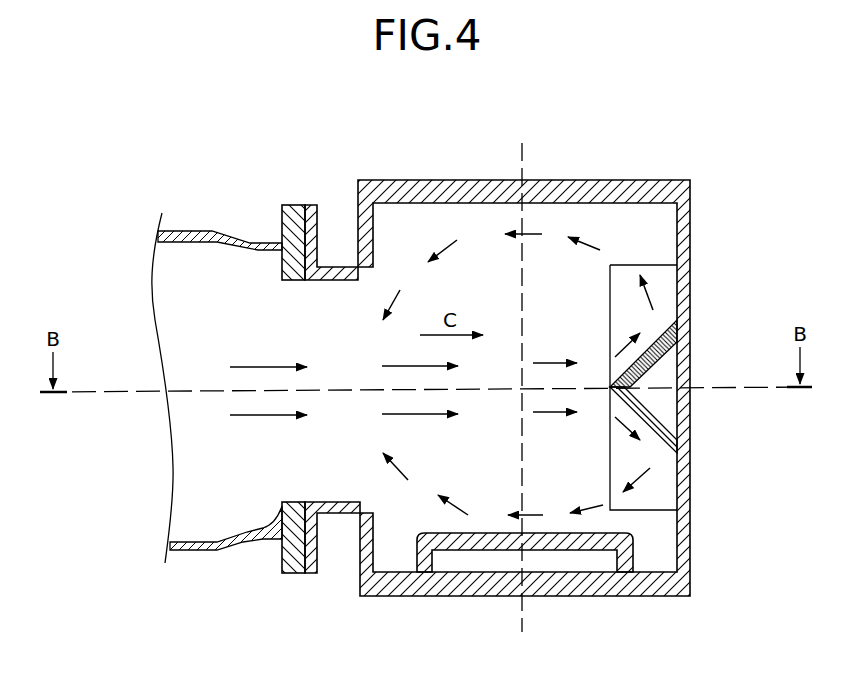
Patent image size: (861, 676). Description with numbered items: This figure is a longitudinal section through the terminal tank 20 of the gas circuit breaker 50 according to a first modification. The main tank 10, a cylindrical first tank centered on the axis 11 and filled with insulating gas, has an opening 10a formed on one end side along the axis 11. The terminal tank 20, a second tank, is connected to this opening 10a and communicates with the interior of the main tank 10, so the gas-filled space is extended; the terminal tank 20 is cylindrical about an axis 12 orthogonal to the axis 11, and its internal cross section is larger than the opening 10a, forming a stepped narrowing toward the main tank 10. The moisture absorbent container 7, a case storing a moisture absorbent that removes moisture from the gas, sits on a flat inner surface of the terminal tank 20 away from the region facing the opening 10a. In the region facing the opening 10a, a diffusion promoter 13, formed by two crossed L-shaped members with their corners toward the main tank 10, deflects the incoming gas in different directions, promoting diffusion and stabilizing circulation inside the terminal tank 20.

The gas circuit breaker 50 is at (443, 147).
The main tank 10 is at (192, 231).
The opening 10a is at (276, 256).
The terminal tank 20 is at (667, 180).
The axis 12 is at (522, 158).
The axis 11 is at (733, 387).
The diffusion promoter 13 is at (655, 440).
The moisture absorbent container 7 is at (417, 552).